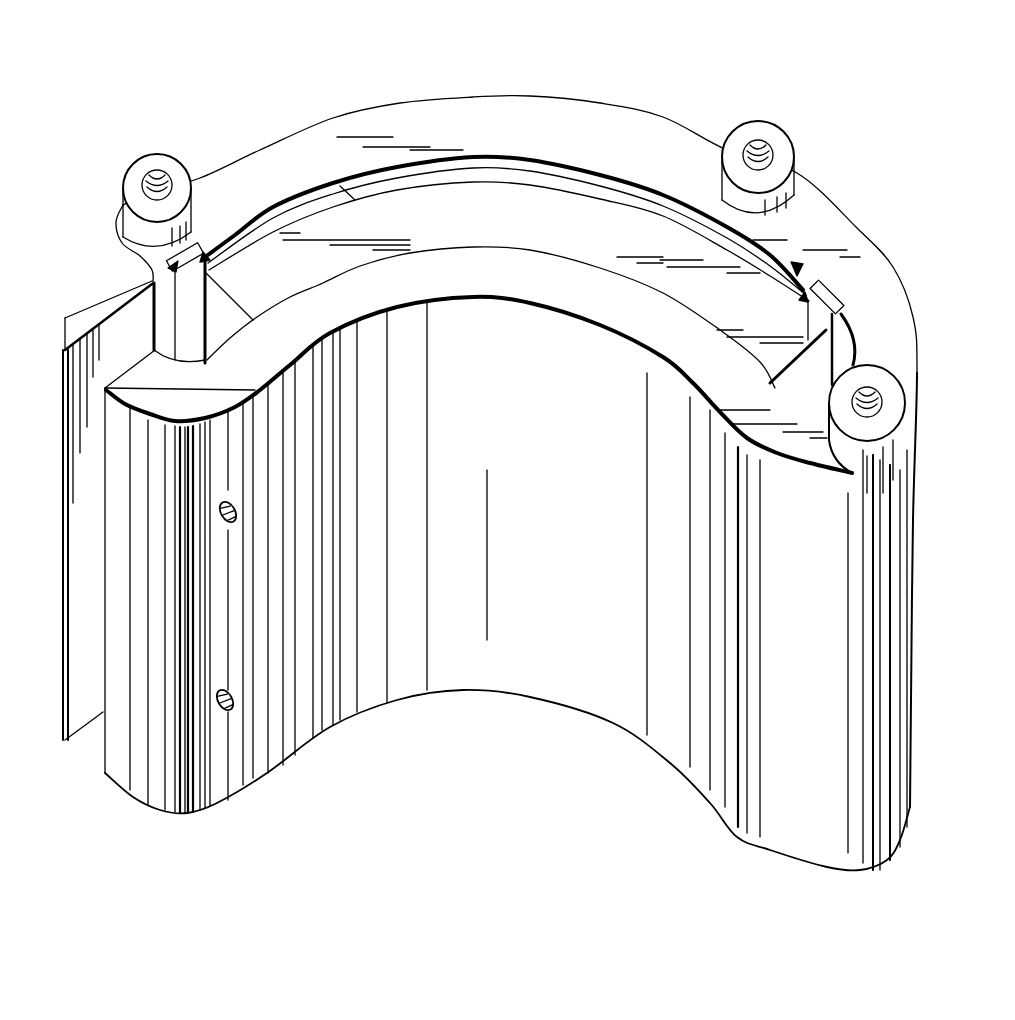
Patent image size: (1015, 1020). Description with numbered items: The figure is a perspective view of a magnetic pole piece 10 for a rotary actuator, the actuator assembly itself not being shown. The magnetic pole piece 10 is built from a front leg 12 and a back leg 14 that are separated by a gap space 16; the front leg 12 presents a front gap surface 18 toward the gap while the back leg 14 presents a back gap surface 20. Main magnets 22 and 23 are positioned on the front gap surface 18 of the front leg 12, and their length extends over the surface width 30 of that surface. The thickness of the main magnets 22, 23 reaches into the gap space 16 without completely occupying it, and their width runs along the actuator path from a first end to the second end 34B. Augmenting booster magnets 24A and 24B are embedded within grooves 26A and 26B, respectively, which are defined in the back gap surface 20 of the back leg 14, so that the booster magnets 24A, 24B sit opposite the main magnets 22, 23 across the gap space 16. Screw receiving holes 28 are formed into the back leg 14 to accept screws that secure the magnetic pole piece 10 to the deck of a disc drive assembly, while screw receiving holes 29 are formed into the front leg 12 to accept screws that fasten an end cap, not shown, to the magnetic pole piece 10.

The magnetic pole piece 10 is at (866, 124).
The front leg 12 is at (832, 482).
The back leg 14 is at (590, 120).
The gap space 16 is at (273, 207).
The front gap surface 18 is at (845, 345).
The back gap surface 20 is at (487, 156).
The main magnet 22 is at (621, 220).
The main magnet 23 is at (391, 202).
The augmenting booster magnet 24A is at (172, 250).
The augmenting booster magnet 24B is at (817, 330).
The groove 26A is at (166, 262).
The groove 26B is at (806, 285).
The screw receiving hole 28 is at (152, 163).
The screw receiving hole 29 is at (237, 508).
The surface width 30 is at (543, 303).
The second end 34B is at (797, 268).